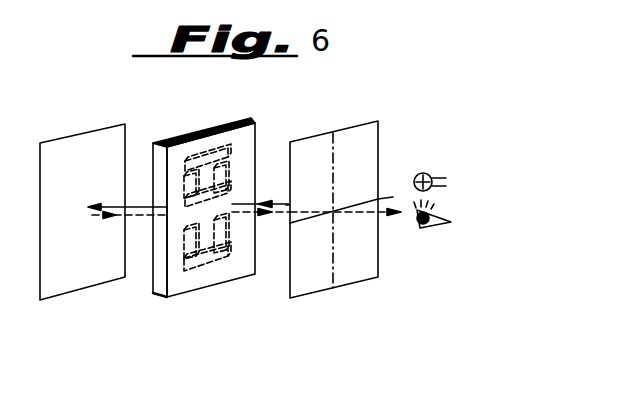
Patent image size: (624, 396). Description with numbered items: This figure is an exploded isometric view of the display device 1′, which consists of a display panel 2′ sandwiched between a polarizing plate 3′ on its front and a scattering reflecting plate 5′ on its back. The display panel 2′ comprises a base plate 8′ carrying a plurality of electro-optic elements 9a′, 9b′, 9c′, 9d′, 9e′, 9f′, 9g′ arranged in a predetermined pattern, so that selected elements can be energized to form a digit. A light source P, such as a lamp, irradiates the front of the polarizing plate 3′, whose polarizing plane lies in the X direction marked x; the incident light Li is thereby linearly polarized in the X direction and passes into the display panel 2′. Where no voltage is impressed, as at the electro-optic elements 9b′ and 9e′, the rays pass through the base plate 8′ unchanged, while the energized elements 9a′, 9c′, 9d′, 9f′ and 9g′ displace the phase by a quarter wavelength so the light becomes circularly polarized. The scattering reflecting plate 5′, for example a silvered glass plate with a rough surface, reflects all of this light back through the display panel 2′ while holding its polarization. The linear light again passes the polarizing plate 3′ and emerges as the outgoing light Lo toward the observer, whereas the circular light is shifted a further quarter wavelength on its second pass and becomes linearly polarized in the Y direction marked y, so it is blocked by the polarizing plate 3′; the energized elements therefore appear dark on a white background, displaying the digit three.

The display device 1′ is at (246, 388).
The display panel 2′ is at (187, 297).
The polarizing plate 3′ is at (317, 290).
The scattering reflecting plate 5′ is at (47, 302).
The base plate 8′ is at (160, 295).
The electro-optic element 9a′ is at (225, 148).
The electro-optic element 9b′ is at (186, 183).
The electro-optic element 9c′ is at (229, 178).
The electro-optic element 9d′ is at (190, 213).
The electro-optic element 9e′ is at (186, 262).
The electro-optic element 9f′ is at (226, 236).
The electro-optic element 9g′ is at (210, 268).
The X direction x is at (305, 220).
The Y direction y is at (334, 135).
The incident light Li is at (390, 197).
The light source P is at (432, 175).
The outgoing light to observer Lo is at (380, 214).